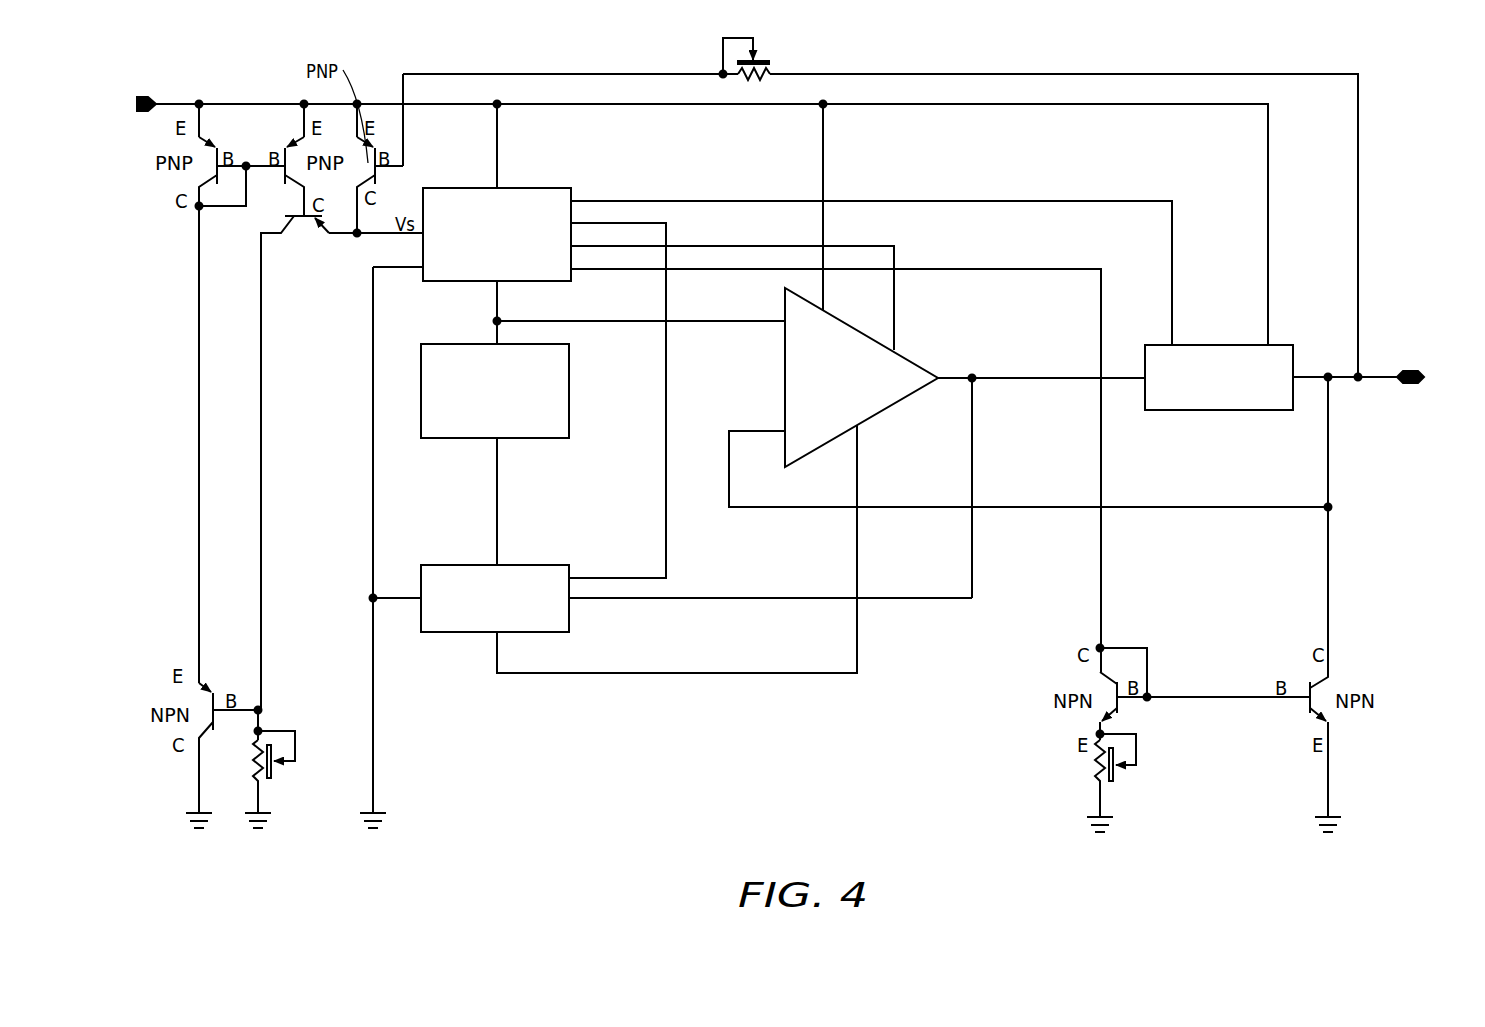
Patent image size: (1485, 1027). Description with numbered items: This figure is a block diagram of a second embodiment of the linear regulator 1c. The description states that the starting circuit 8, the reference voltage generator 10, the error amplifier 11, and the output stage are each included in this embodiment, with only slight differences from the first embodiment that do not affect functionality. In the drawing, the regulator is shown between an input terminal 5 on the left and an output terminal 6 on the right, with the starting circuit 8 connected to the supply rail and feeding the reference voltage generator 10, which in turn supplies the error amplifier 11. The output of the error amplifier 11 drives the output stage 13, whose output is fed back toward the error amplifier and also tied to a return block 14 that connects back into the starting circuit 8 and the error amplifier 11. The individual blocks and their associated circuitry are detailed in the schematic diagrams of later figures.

The linear regulator 1c is at (432, 42).
The input terminal 5 is at (181, 103).
The output terminal 6 is at (1383, 380).
The starting circuit 8 is at (472, 282).
The reference voltage generator 10 is at (472, 440).
The error amplifier 11 is at (888, 408).
The output stage 13 is at (1185, 411).
The return circuit 14 is at (472, 633).